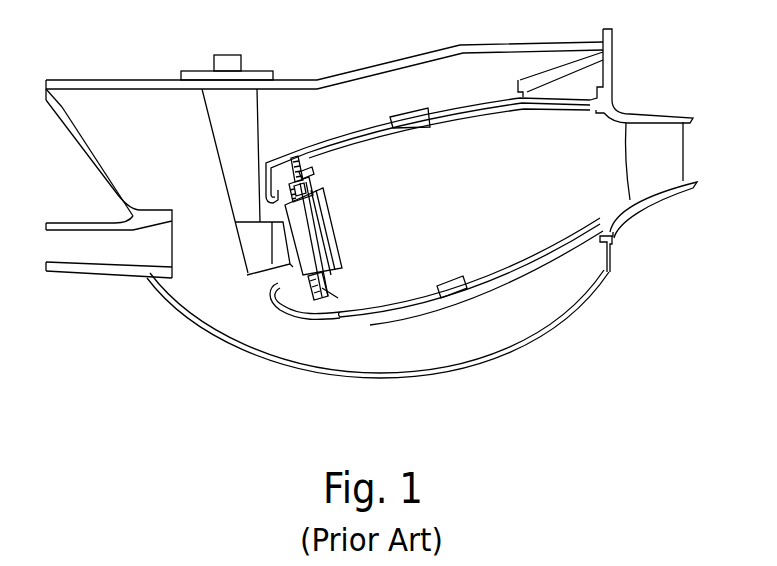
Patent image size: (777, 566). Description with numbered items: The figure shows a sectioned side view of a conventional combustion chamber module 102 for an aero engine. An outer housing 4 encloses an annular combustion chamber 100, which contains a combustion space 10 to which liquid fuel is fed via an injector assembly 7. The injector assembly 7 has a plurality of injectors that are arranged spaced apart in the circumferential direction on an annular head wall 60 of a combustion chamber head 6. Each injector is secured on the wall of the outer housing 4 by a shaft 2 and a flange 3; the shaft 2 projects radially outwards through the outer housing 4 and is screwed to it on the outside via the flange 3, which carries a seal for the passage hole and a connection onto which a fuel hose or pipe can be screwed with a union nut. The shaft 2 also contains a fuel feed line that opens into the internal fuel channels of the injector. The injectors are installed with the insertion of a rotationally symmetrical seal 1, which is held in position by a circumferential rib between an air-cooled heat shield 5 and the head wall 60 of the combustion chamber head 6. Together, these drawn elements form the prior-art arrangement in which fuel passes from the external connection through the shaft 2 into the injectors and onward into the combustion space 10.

The rotationally symmetrical seal 1 is at (343, 237).
The shaft 2 is at (250, 129).
The flange 3 is at (270, 66).
The outer housing 4 is at (350, 68).
The air-cooled heat shield 5 is at (327, 172).
The combustion chamber head 6 is at (312, 183).
The injector assembly 7 is at (257, 268).
The combustion space 10 is at (393, 290).
The annular head wall 60 is at (312, 296).
The annular combustion chamber 100 is at (457, 318).
The combustion chamber module 102 is at (297, 383).